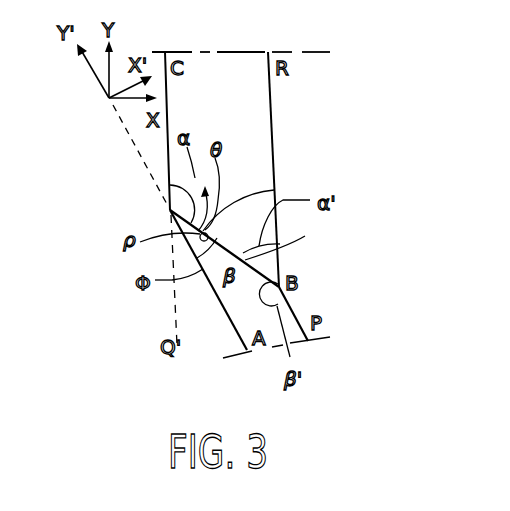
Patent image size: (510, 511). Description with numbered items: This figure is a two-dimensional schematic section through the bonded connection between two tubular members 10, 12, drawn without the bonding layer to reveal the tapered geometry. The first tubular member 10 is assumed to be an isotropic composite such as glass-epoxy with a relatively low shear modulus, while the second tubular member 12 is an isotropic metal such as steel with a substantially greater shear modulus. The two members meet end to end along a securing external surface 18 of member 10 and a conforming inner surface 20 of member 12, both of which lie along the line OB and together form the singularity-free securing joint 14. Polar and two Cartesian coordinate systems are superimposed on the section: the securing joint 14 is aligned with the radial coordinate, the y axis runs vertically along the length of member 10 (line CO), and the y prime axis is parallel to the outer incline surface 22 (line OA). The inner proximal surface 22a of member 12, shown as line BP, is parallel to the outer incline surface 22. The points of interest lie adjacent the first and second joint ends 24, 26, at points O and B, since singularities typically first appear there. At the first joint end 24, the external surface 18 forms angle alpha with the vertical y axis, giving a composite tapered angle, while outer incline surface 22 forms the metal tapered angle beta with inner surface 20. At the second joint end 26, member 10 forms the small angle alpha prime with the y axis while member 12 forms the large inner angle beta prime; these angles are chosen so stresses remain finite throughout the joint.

The tubular member 10 is at (247, 104).
The tubular member 12 is at (242, 323).
The securing joint 14 is at (275, 183).
The external surface 18 is at (208, 236).
The inner surface 20 is at (279, 237).
The outer incline surface 22 is at (212, 287).
The inner proximal surface 22a is at (296, 315).
The first joint end 24 is at (168, 192).
The second joint end 26 is at (282, 268).